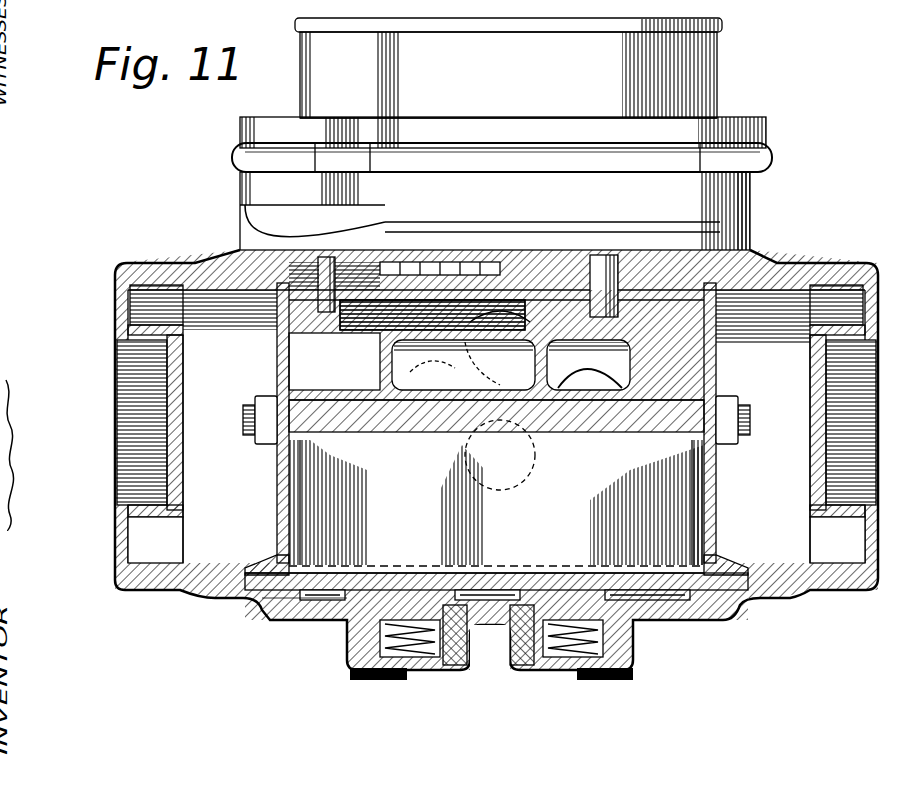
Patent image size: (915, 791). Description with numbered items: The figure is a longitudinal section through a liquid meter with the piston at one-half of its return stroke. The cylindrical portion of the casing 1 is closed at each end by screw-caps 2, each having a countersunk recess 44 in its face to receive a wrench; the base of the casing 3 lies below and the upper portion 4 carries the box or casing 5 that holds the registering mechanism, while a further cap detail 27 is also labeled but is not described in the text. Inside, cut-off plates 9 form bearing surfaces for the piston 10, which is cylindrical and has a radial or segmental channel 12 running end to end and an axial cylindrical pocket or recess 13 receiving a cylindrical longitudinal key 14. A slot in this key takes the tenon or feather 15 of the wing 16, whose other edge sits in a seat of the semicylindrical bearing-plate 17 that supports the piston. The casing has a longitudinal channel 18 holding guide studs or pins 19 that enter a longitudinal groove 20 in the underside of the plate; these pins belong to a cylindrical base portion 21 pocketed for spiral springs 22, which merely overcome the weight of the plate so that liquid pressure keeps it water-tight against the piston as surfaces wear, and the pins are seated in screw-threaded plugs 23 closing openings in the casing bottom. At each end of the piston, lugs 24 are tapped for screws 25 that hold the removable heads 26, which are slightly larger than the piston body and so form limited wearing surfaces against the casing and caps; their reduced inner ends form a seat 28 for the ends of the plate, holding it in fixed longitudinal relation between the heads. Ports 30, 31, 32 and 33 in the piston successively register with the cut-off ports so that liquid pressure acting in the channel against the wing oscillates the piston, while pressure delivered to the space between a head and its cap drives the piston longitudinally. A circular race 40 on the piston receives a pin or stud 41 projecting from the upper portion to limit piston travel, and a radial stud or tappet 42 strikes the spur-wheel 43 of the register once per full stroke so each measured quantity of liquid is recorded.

The cylindrical portion of the casing 1 is at (760, 260).
The screw-caps 2 is at (115, 506).
The base of the casing 3 is at (285, 604).
The upper portion of the casing 4 is at (502, 183).
The box or casing 5 is at (508, 68).
The cut-off plates 9 is at (540, 266).
The piston 10 is at (353, 396).
The radial or segmental channel 12 is at (604, 576).
The axial cylindrical pocket or recess 13 is at (277, 394).
The cylindrical longitudinal key 14 is at (320, 431).
The tenon or feather 15 is at (640, 431).
The wing 16 is at (612, 490).
The semicylindrical bearing-plate 17 is at (487, 580).
The longitudinal channel 18 is at (740, 606).
The guide studs or pins 19 is at (418, 570).
The longitudinal groove 20 is at (322, 612).
The cylindrical base portion 21 is at (452, 660).
The spiral springs 22 is at (660, 612).
The screw-threaded plugs 23 is at (432, 660).
The lugs 24 is at (262, 446).
The screws 25 is at (243, 420).
The removable heads 26 is at (277, 486).
The partition 27 is at (115, 312).
The seat 28 is at (304, 556).
The port 30 is at (588, 365).
The port 31 is at (498, 342).
The port 32 is at (430, 434).
The port 33 is at (511, 455).
The circular race 40 is at (604, 277).
The pin or stud 41 is at (690, 256).
The radial stud or tappet 42 is at (327, 256).
The spur-wheel 43 is at (472, 262).
The countersunk recess 44 is at (117, 445).